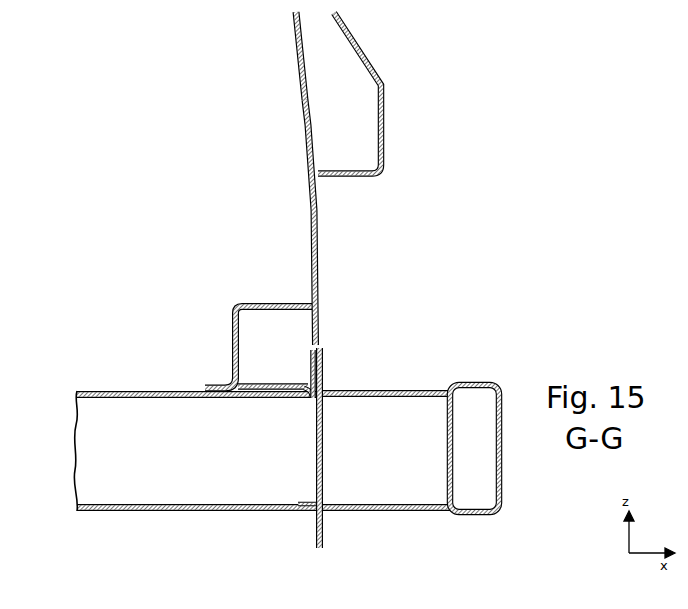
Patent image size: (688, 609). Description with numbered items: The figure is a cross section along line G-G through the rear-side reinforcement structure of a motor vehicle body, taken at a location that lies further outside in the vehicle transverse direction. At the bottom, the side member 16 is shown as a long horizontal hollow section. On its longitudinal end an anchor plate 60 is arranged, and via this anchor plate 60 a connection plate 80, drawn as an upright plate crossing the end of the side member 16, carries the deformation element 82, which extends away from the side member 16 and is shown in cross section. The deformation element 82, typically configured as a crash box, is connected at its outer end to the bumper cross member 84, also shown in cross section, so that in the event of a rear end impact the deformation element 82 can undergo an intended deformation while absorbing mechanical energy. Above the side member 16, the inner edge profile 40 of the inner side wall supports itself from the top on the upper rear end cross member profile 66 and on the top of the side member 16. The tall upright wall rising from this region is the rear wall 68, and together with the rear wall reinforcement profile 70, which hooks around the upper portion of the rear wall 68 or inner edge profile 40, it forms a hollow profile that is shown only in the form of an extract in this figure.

The side member 16 is at (139, 405).
The inner edge profile 40 is at (299, 74).
The anchor plate 60 is at (307, 396).
The upper rear end cross member profile 66 is at (273, 388).
The rear wall 68 is at (312, 132).
The rear wall reinforcement profile 70 is at (385, 133).
The connection plate 80 is at (325, 383).
The deformation element 82 is at (414, 403).
The bumper cross member 84 is at (473, 395).